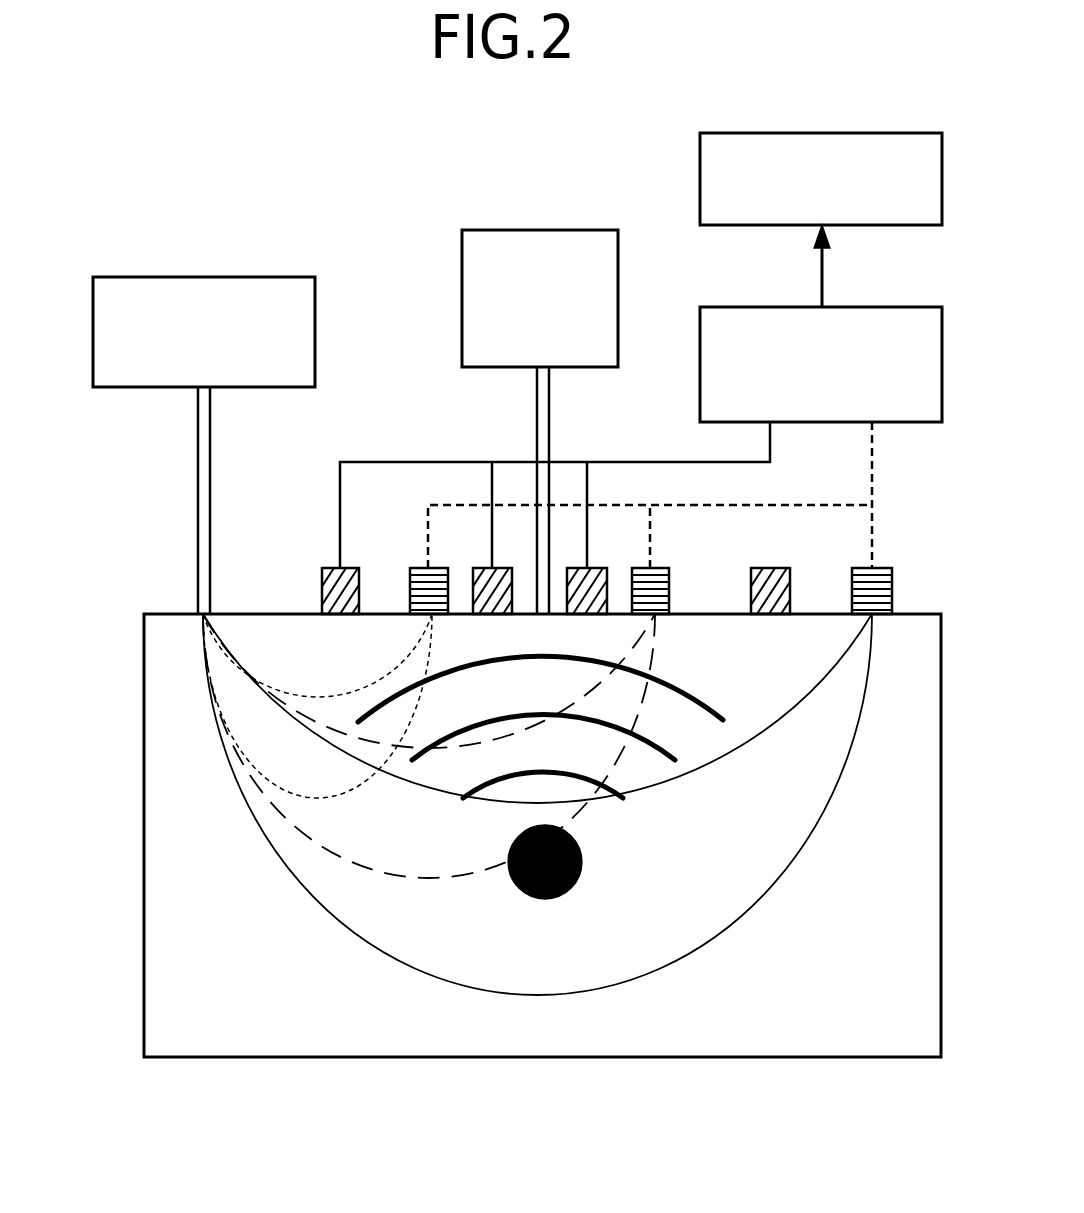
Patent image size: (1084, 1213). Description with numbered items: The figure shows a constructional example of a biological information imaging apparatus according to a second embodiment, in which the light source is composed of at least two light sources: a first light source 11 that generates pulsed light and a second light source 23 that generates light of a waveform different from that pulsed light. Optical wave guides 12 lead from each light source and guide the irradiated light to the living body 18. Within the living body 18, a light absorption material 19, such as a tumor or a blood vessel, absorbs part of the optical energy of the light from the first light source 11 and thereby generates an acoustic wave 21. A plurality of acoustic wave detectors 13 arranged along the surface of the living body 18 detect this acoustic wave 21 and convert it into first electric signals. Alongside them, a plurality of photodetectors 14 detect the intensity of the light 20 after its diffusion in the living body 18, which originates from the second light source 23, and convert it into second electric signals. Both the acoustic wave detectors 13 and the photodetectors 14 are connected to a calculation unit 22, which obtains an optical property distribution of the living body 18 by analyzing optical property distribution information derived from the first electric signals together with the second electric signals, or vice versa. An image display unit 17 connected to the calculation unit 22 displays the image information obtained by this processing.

The first light source 11 is at (577, 230).
The optical wave guide 12 is at (197, 462).
The acoustic wave detector 13 is at (335, 568).
The photodetector 14 is at (422, 568).
The image display unit 17 is at (748, 133).
The living body 18 is at (131, 614).
The light absorption material 19 is at (525, 895).
The light after diffusion 20 is at (677, 942).
The acoustic wave 21 is at (698, 686).
The calculation unit 22 is at (742, 307).
The second light source 23 is at (262, 277).